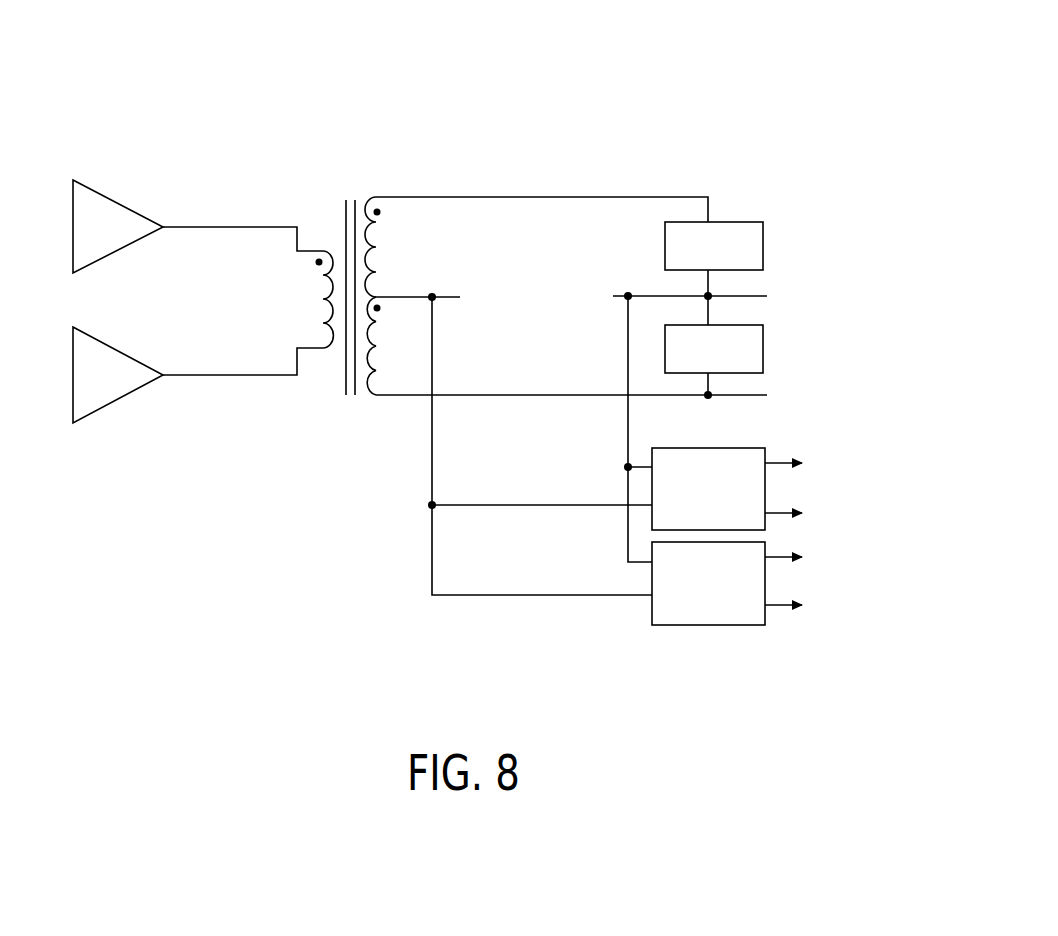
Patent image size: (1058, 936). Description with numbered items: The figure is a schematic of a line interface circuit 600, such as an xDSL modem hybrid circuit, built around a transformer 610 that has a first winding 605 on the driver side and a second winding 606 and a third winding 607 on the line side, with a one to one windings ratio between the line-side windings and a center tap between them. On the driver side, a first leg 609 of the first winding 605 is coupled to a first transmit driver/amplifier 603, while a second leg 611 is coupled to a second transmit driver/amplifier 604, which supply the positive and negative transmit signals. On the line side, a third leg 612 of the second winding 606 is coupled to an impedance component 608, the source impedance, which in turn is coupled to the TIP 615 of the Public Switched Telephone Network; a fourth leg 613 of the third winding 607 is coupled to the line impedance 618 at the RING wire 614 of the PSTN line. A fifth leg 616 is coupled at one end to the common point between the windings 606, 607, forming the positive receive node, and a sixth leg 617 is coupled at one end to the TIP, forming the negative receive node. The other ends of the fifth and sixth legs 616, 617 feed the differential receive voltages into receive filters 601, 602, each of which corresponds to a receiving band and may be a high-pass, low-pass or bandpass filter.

The line interface circuit 600 is at (593, 65).
The receive filter 601 is at (732, 489).
The receive filter 602 is at (732, 583).
The first transmit driver/amplifier 603 is at (118, 217).
The second transmit driver/amplifier 604 is at (118, 366).
The first winding 605 is at (303, 299).
The second winding 606 is at (394, 247).
The third winding 607 is at (395, 346).
The impedance component 608 is at (739, 259).
The first leg 609 is at (243, 220).
The T1 transformer 610 is at (348, 262).
The second leg 611 is at (243, 372).
The third leg 612 is at (542, 195).
The fourth leg 613 is at (571, 411).
The RING wire 614 is at (796, 390).
The TIP 615 is at (750, 293).
The fifth leg 616 is at (514, 437).
The sixth leg 617 is at (612, 421).
The line impedance 618 is at (739, 334).